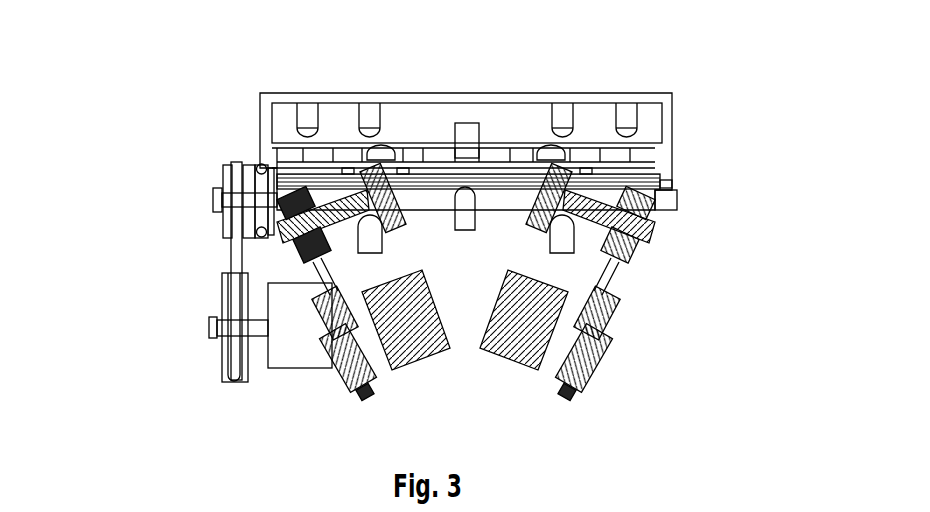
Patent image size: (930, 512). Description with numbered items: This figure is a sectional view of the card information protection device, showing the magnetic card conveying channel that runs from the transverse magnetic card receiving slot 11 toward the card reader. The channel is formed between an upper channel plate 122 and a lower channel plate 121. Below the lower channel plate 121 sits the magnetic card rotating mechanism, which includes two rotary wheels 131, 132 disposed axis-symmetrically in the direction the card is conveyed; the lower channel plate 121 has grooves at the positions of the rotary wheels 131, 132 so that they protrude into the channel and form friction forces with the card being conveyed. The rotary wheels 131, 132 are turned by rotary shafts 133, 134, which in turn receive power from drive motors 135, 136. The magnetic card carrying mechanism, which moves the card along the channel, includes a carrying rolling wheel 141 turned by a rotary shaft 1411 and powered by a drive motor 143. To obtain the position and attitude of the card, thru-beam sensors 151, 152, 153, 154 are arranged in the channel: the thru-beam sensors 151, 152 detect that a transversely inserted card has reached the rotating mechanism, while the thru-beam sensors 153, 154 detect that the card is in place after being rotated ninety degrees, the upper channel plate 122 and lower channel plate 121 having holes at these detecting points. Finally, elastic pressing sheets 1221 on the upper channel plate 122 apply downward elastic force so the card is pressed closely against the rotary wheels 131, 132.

The transverse magnetic card receiving slot 11 is at (280, 113).
The thru-beam sensor 151 is at (308, 112).
The thru-beam sensor 154 is at (365, 113).
The carrying rolling wheel 141 is at (465, 210).
The elastic pressing sheet 1221 is at (465, 122).
The thru-beam sensor 153 is at (562, 117).
The thru-beam sensor 152 is at (622, 113).
The rotary shaft 1411 is at (213, 200).
The upper channel plate 122 is at (620, 153).
The lower channel plate 121 is at (620, 183).
The rotary shaft 134 is at (650, 235).
The rotary shaft 133 is at (283, 227).
The drive motor 143 is at (283, 333).
The drive motor 136 is at (587, 340).
The drive motor 135 is at (385, 335).
The rotary wheel 131 is at (387, 222).
The rotary wheel 132 is at (543, 225).